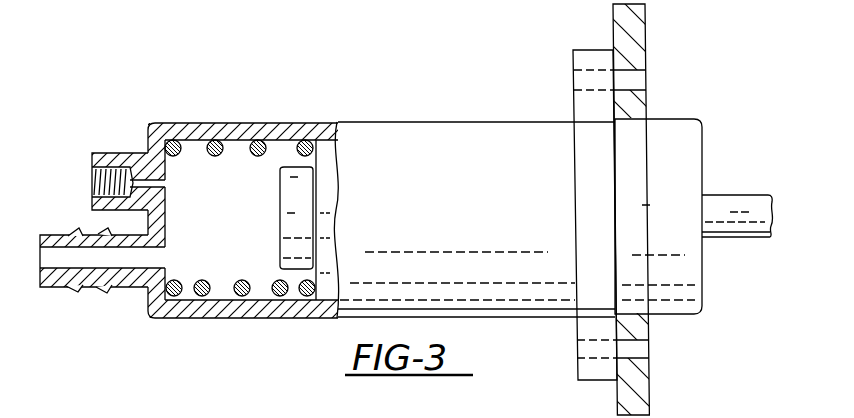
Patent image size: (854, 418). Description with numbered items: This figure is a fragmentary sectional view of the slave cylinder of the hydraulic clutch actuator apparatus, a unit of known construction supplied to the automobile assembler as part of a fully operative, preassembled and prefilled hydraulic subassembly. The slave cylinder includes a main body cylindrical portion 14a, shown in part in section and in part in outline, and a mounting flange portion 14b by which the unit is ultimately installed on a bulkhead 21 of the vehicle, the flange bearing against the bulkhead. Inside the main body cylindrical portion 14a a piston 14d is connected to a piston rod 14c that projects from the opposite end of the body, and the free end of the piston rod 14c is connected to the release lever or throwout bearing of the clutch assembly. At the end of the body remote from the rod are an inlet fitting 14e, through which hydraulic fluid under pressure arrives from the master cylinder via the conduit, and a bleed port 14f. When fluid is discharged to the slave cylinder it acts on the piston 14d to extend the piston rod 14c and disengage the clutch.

The main body cylindrical portion 14a is at (450, 121).
The mounting flange portion 14b is at (574, 90).
The piston rod 14c is at (730, 195).
The piston 14d is at (280, 205).
The inlet fitting 14e is at (62, 287).
The bleed port 14f is at (96, 153).
The bulkhead 21 is at (643, 51).